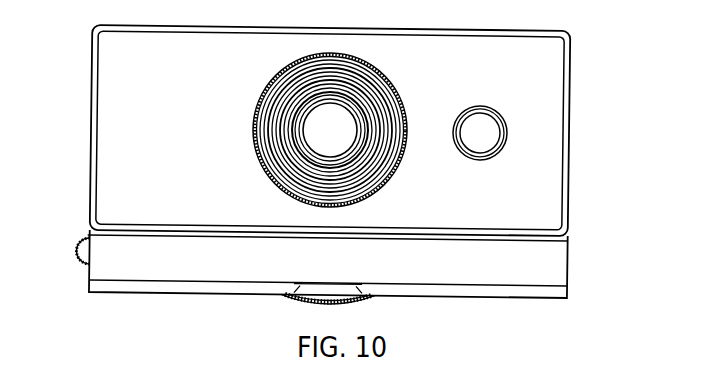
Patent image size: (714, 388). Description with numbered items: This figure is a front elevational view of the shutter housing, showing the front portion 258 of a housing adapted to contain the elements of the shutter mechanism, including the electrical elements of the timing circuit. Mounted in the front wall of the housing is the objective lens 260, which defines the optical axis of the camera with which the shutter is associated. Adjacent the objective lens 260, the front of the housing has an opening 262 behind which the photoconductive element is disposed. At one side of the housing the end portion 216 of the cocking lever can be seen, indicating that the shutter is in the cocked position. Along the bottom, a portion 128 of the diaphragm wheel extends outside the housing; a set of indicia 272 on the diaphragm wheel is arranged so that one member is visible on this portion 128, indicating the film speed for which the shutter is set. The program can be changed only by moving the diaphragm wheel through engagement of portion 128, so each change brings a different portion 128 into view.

The front portion of housing 258 is at (120, 168).
The objective lens 260 is at (340, 125).
The opening 262 is at (480, 124).
The end portion of cocking lever 216 is at (84, 261).
The portion of diaphragm wheel 128 is at (345, 297).
The set of indicia 272 is at (297, 302).